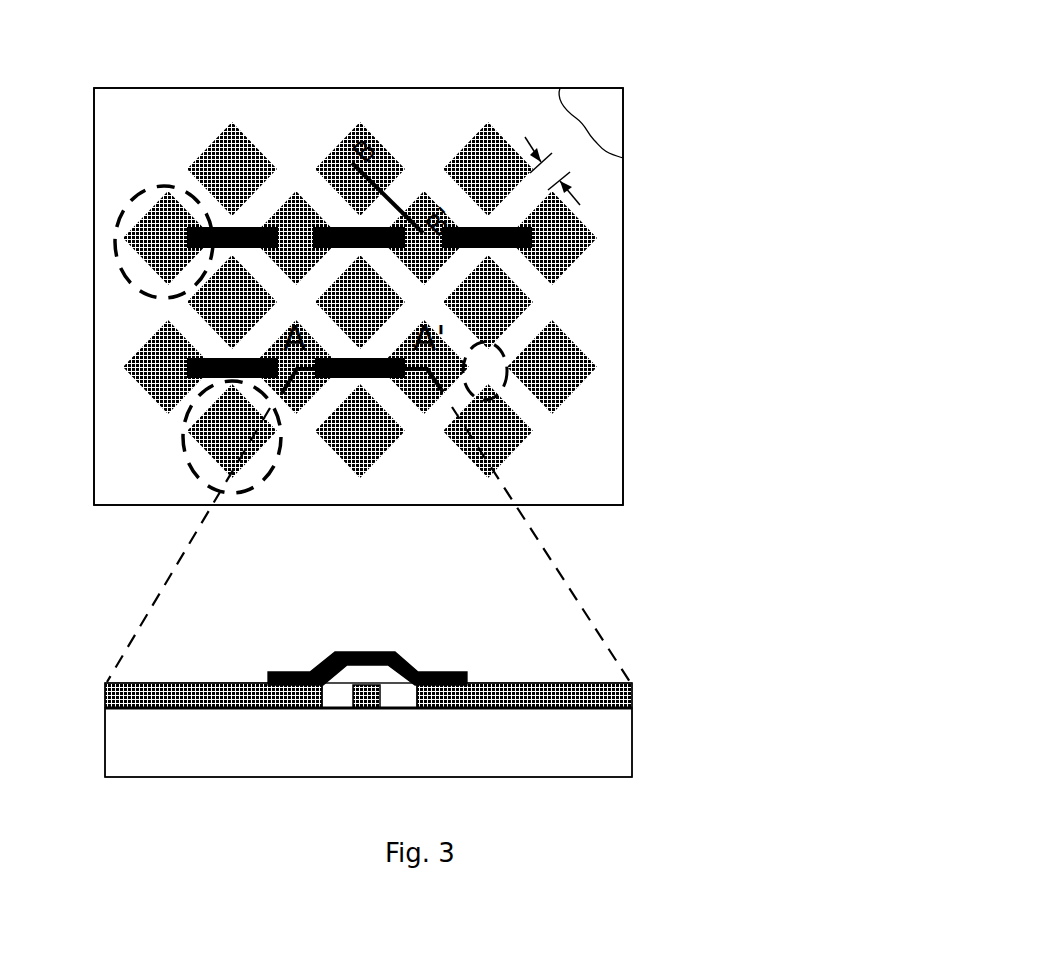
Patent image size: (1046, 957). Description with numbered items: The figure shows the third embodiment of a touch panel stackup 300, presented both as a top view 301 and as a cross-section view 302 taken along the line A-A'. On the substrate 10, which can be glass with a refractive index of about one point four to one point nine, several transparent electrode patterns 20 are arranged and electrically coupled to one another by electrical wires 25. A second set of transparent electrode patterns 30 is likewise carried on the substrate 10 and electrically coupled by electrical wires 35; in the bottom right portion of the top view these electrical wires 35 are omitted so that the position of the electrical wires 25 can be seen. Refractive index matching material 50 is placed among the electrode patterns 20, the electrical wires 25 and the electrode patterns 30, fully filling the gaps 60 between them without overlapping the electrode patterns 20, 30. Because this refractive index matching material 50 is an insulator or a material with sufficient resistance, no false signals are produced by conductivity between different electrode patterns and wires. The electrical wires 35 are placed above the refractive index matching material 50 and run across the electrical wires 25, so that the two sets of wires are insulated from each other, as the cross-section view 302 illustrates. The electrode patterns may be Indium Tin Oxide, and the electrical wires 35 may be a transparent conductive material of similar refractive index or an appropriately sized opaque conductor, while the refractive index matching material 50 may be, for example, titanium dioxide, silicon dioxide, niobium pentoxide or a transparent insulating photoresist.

The touch panel stackup 300 is at (358, 252).
The top view 301 is at (416, 296).
The cross-section view 302 is at (422, 718).
The substrate 10 is at (610, 105).
The transparent electrode patterns 20 is at (194, 410).
The electrical wires 25 is at (478, 326).
The transparent electrode patterns 30 is at (128, 207).
The electrical wires 35 is at (505, 237).
The refractive index matching material 50 is at (187, 136).
The gaps 60 is at (563, 163).